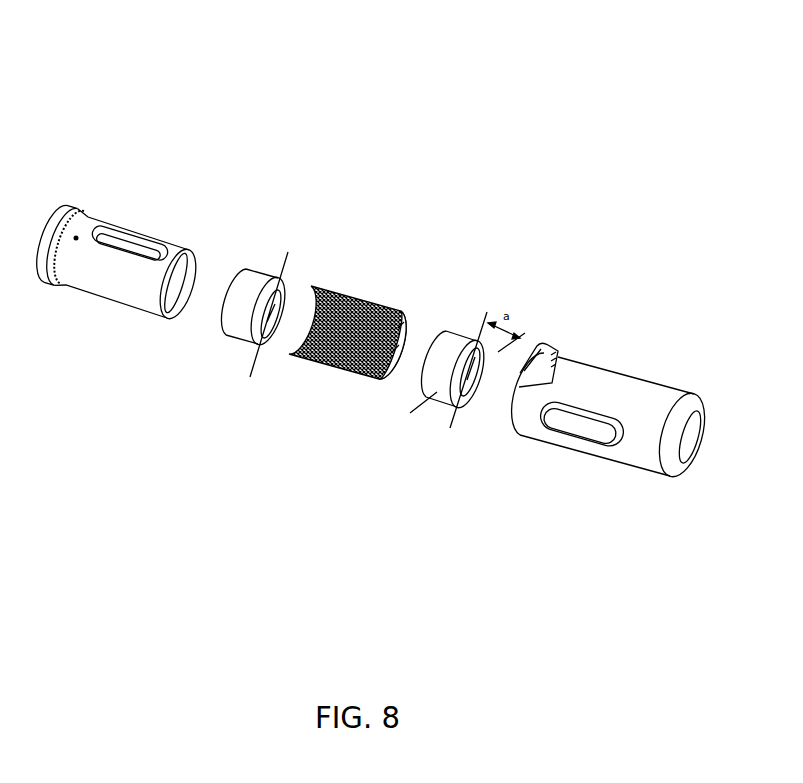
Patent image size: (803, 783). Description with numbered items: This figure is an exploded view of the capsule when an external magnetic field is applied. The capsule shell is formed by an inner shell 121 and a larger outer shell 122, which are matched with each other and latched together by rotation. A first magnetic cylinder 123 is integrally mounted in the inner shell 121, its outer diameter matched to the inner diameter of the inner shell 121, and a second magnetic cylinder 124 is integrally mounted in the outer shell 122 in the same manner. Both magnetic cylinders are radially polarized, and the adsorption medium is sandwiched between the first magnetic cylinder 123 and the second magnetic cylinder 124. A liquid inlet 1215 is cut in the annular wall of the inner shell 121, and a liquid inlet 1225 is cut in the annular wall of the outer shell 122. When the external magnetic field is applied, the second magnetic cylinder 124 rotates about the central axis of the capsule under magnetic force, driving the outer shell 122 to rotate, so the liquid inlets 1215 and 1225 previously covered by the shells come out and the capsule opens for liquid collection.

The inner shell 121 is at (90, 250).
The liquid inlet 1215 is at (112, 237).
The first magnetic cylinder 123 is at (263, 273).
The second magnetic cylinder 124 is at (450, 352).
The outer shell 122 is at (607, 390).
The liquid inlet 1225 is at (565, 418).